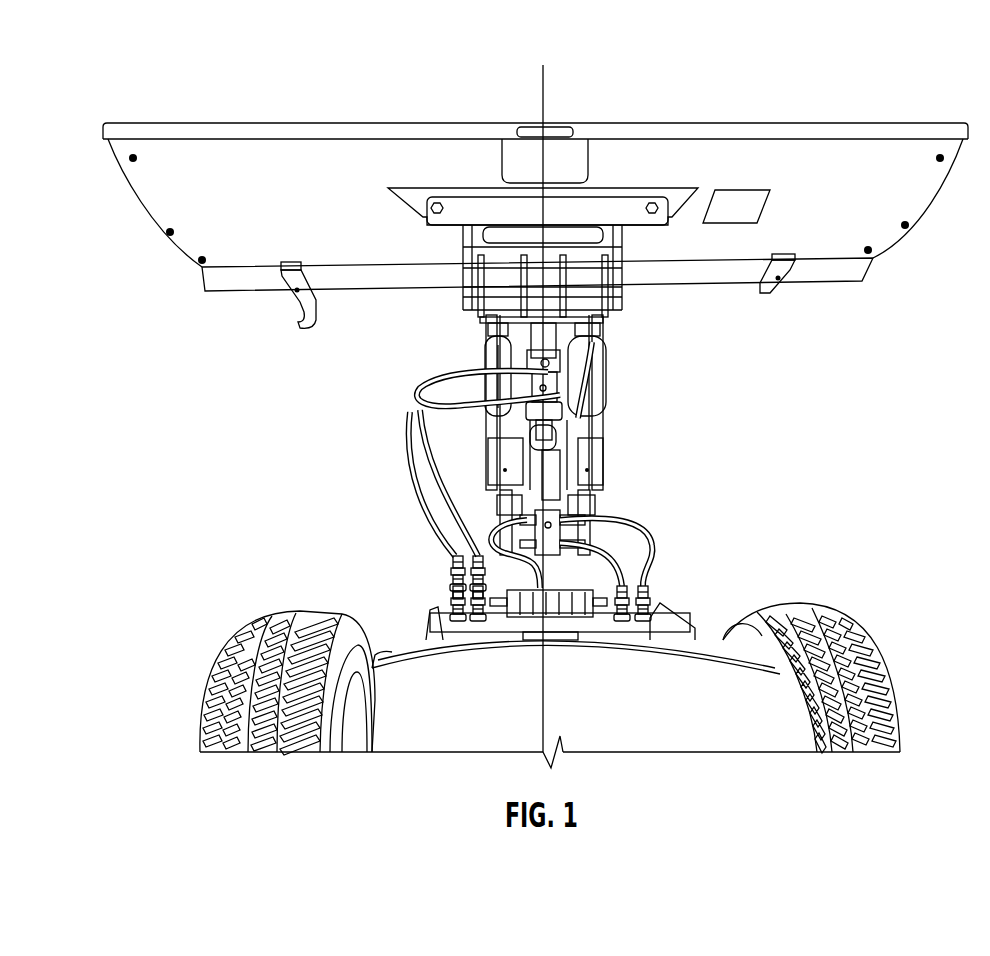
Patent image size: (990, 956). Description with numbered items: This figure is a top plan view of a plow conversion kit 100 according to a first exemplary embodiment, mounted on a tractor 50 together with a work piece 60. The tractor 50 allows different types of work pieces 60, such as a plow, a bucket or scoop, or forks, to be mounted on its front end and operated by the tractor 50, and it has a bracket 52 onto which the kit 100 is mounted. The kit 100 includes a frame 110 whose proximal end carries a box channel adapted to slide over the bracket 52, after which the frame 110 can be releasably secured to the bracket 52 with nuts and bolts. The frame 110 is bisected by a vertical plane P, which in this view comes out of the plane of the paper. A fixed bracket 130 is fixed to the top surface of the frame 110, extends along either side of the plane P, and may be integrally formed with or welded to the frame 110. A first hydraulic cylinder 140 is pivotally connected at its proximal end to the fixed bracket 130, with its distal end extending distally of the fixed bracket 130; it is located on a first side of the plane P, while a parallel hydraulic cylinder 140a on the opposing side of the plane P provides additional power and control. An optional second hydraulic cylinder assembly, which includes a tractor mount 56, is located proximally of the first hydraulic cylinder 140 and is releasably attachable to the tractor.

The vertical plane P is at (544, 97).
The work piece 60 is at (237, 291).
The first hydraulic cylinder 140 is at (487, 347).
The hydraulic cylinder 140a is at (600, 346).
The fixed bracket 130 is at (486, 381).
The frame 110 is at (497, 463).
The plow conversion kit 100 is at (594, 459).
The tractor mount 56 is at (455, 588).
The bracket 52 is at (650, 537).
The tractor 50 is at (392, 652).